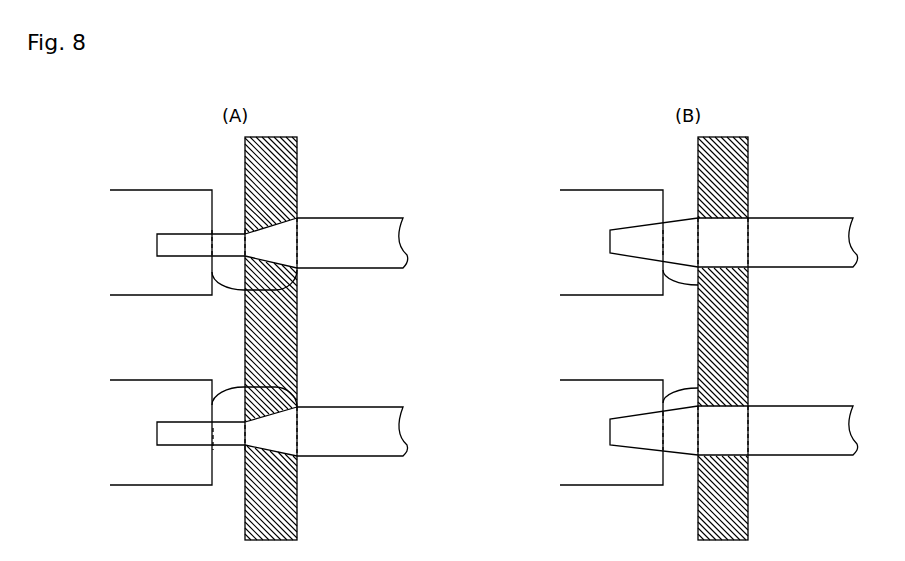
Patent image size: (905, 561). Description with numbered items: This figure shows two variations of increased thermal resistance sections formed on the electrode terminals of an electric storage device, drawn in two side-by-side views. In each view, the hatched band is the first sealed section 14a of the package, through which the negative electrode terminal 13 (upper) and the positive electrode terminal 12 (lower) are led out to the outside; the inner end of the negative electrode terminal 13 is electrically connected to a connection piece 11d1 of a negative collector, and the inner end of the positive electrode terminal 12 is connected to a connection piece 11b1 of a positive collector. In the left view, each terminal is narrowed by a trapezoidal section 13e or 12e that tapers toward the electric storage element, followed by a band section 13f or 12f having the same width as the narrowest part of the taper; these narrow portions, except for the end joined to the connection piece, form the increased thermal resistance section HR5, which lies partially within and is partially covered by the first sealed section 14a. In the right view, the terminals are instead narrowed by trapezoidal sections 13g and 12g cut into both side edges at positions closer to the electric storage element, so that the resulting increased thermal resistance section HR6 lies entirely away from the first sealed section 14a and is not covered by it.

The connection piece 11d1 is at (133, 208).
The connection piece 11b1 is at (135, 472).
The negative electrode terminal 13 is at (372, 232).
The trapezoidal section 13e is at (273, 235).
The band section 13f is at (225, 242).
The trapezoidal section 13g is at (675, 240).
The positive electrode terminal 12 is at (372, 447).
The trapezoidal section 12e is at (273, 440).
The band section 12f is at (228, 435).
The trapezoidal section 12g is at (678, 433).
The first sealed section 14a is at (283, 337).
The increased thermal resistance section HR5 is at (243, 289).
The increased thermal resistance section HR6 is at (686, 285).